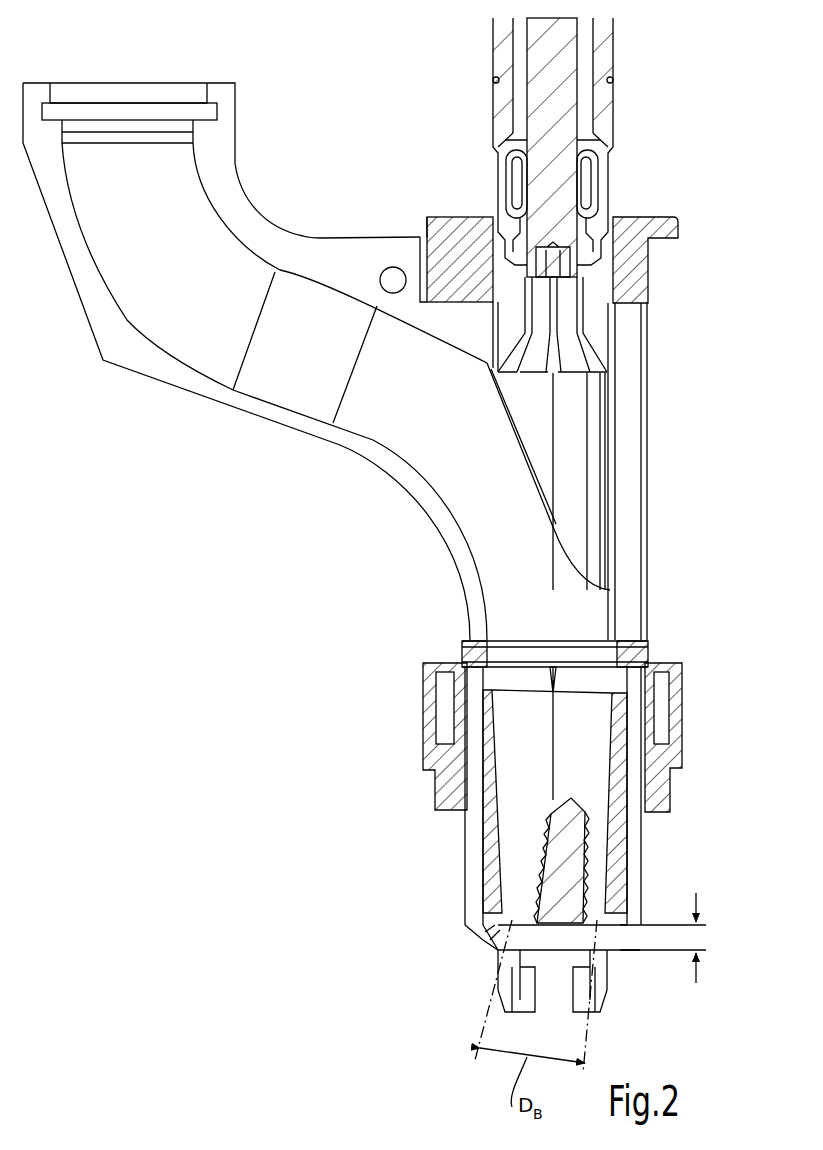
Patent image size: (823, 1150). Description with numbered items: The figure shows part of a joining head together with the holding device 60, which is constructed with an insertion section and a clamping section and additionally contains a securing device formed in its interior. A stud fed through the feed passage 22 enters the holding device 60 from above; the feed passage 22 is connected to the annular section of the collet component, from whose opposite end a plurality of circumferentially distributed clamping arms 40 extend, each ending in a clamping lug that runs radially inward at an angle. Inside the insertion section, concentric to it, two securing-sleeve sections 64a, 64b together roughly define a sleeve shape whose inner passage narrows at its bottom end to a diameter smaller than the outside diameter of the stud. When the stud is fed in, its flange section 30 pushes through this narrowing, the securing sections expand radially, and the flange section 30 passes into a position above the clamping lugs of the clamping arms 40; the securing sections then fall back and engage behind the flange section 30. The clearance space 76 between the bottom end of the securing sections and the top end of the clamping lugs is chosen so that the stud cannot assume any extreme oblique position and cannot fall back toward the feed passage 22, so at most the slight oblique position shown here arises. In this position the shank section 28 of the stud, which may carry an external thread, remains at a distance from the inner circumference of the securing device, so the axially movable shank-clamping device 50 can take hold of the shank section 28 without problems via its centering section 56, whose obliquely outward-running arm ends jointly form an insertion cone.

The feed passage 22 is at (292, 387).
The shank-clamping device 50 is at (624, 111).
The centering section 56 is at (580, 364).
The holding device 60 is at (403, 654).
The clamping arms 40 is at (472, 868).
The securing-sleeve section 64a is at (483, 822).
The securing-sleeve section 64b is at (613, 842).
The shank section 28 is at (587, 868).
The flange section 30 is at (519, 928).
The clearance space 76 is at (679, 938).